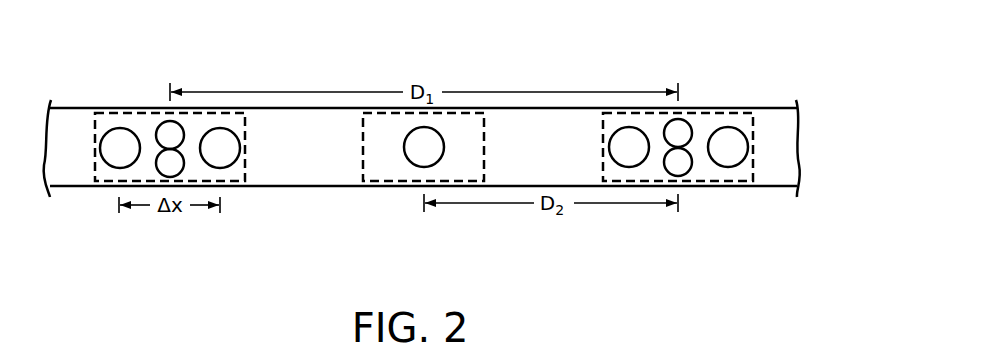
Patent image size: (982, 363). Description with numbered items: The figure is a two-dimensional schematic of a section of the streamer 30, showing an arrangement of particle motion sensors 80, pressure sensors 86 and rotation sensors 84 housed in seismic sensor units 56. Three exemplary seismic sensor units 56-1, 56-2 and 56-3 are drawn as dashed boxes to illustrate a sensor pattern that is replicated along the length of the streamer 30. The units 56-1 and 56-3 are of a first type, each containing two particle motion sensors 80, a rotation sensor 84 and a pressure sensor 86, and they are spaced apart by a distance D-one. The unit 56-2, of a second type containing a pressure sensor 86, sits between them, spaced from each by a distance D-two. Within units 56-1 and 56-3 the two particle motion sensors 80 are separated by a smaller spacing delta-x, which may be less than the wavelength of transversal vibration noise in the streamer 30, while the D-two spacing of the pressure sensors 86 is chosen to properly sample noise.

The streamer 30 is at (646, 39).
The seismic sensor unit 56 is at (451, 156).
The seismic sensor unit 56-1 is at (245, 147).
The seismic sensor unit 56-2 is at (363, 147).
The seismic sensor unit 56-3 is at (753, 147).
The particle motion sensor 80 is at (106, 134).
The rotation sensor 84 is at (160, 125).
The pressure sensor 86 is at (160, 173).